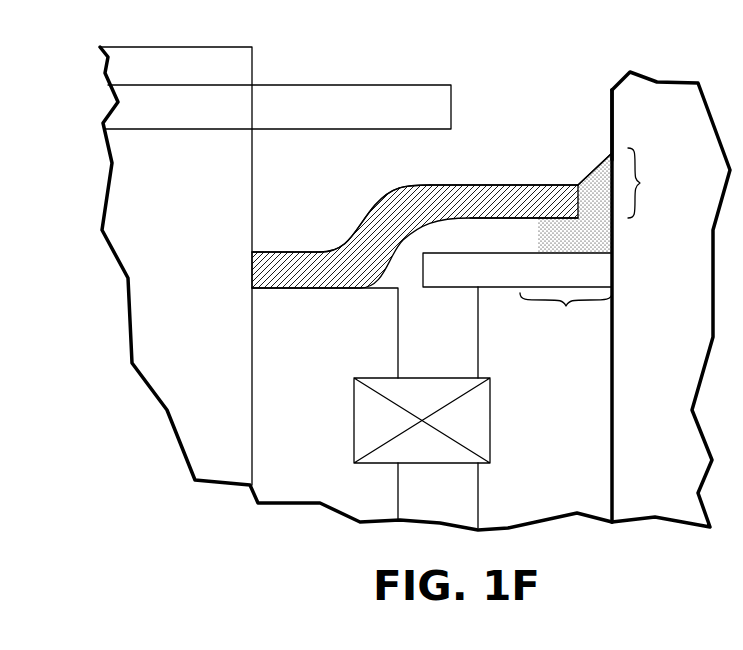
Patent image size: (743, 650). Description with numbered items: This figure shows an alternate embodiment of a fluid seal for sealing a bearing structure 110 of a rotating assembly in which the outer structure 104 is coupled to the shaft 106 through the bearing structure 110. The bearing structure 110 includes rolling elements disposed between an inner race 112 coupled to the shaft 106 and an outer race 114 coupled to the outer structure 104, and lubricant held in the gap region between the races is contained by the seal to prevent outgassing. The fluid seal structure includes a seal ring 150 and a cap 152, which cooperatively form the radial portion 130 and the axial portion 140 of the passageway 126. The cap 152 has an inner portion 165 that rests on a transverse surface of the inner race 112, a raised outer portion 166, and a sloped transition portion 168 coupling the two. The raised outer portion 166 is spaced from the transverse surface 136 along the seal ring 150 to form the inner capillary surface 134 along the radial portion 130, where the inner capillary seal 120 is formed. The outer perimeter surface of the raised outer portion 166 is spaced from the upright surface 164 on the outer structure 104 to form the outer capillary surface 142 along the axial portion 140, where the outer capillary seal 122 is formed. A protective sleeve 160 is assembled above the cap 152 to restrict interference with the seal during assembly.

The outer structure 104 is at (671, 299).
The shaft 106 is at (356, 288).
The bearing structure 110 is at (530, 428).
The inner race 112 is at (325, 404).
The outer race 114 is at (450, 407).
The inner capillary seal 120 is at (538, 231).
The outer capillary seal 122 is at (595, 178).
The passageway 126 is at (592, 240).
The radial portion 130 is at (566, 315).
The inner capillary surface 134 is at (505, 218).
The transverse surface 136 is at (453, 245).
The axial portion 140 is at (652, 183).
The outer capillary surface 142 is at (588, 200).
The seal ring 150 is at (517, 270).
The cap 152 is at (451, 184).
The protective sleeve 160 is at (308, 103).
The upright surface 164 is at (610, 112).
The inner portion 165 is at (282, 252).
The raised outer portion 166 is at (487, 184).
The sloped transition portion 168 is at (363, 222).